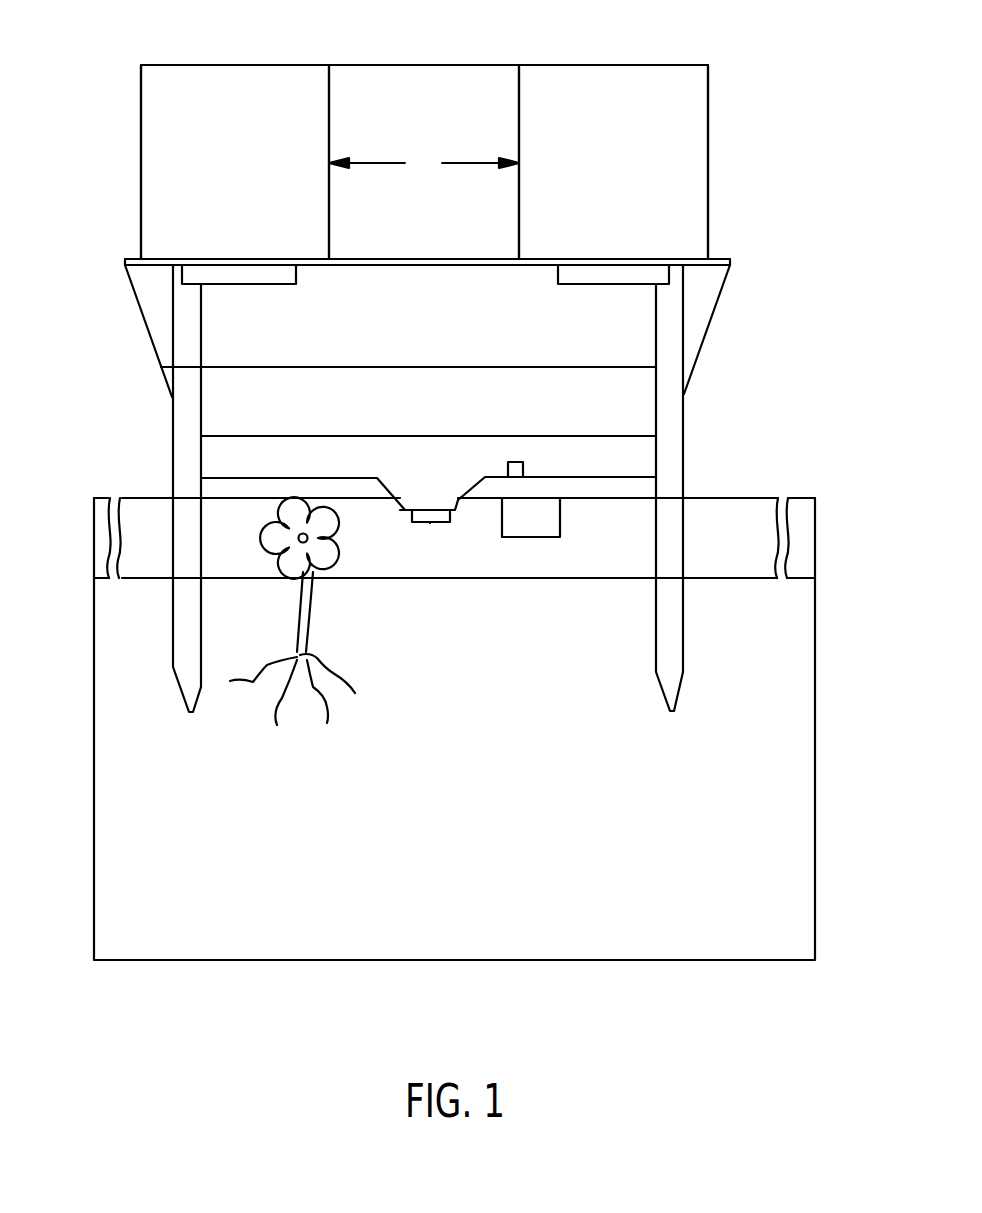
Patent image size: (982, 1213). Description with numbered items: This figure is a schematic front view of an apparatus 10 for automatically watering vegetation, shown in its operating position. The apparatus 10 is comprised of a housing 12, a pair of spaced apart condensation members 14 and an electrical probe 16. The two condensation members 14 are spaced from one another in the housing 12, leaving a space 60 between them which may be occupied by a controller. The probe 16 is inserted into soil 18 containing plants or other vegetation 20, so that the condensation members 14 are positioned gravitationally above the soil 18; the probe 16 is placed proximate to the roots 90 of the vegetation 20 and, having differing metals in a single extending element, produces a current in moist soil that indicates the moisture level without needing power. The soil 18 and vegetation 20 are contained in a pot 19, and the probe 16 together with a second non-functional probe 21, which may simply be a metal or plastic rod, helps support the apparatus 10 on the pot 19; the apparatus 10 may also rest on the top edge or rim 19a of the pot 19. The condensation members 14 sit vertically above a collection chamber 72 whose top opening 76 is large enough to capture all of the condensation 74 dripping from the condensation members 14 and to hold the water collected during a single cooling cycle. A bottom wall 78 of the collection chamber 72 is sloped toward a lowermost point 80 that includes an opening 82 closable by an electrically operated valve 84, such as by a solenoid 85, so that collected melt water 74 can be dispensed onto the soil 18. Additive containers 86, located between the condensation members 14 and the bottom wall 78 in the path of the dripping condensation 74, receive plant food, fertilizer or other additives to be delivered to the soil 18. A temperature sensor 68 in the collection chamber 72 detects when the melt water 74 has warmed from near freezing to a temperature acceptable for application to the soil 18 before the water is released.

The apparatus 10 is at (793, 132).
The housing 12 is at (462, 75).
The condensation members 14 is at (150, 155).
The electrical probe 16 is at (180, 473).
The soil 18 is at (107, 605).
The pot 19 is at (800, 548).
The top edge or rim 19a is at (725, 497).
The vegetation 20 is at (270, 535).
The second non-functional probe 21 is at (672, 475).
The space 60 is at (424, 163).
The temperature sensor 68 is at (530, 470).
The collection chamber 72 is at (715, 275).
The condensation 74 is at (268, 367).
The top opening 76 is at (131, 248).
The bottom wall 78 is at (600, 477).
The lowermost point 80 is at (406, 500).
The opening 82 is at (407, 515).
The electrically operated valve 84 is at (430, 523).
The solenoid 85 is at (553, 513).
The additive containers 86 is at (192, 275).
The roots 90 is at (250, 683).